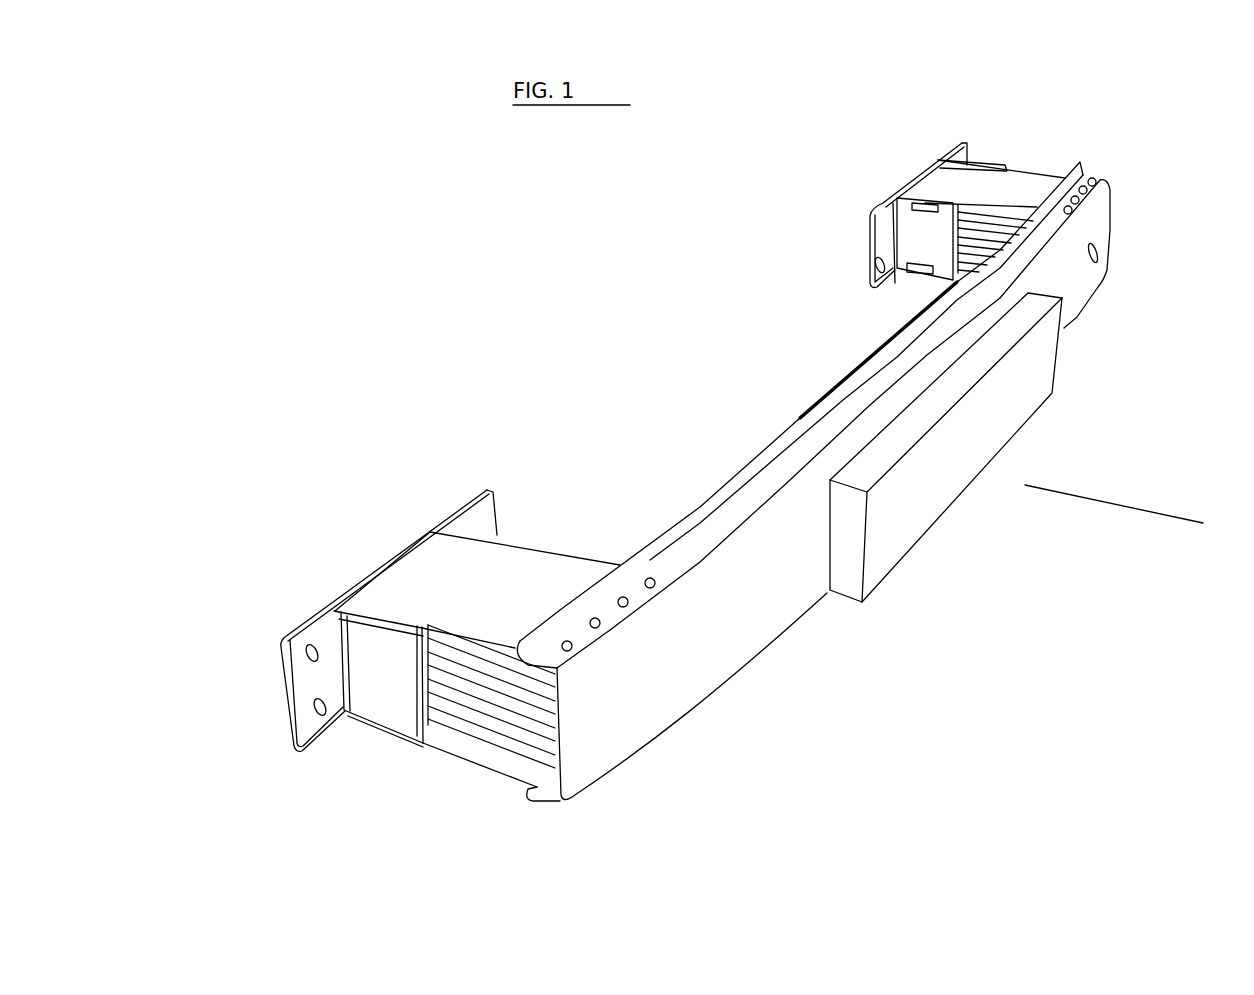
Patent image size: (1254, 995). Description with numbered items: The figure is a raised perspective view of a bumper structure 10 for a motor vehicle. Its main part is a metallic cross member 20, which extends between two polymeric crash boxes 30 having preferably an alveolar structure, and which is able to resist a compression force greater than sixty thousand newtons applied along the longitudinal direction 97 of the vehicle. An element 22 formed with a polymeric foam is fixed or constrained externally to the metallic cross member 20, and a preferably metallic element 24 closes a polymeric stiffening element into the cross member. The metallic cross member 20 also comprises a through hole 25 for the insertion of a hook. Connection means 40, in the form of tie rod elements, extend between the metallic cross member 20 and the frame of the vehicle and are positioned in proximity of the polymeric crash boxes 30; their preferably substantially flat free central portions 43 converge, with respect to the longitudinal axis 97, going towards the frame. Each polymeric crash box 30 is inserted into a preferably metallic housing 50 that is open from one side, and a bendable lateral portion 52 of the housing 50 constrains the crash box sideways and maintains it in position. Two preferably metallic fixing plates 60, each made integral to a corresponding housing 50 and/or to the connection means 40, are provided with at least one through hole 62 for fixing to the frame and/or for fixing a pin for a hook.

The bumper structure 10 is at (453, 257).
The metallic cross member 20 is at (674, 658).
The element formed with a polymeric foam 22 is at (917, 490).
The element 24 is at (830, 390).
The through hole 25 is at (1100, 250).
The polymeric crash box 30 is at (503, 702).
The connection means 40 is at (560, 586).
The free central portion 43 is at (533, 575).
The housing 50 is at (990, 163).
The bendable lateral portion 52 is at (933, 207).
The fixing plate 60 is at (477, 517).
The through hole 62 is at (310, 650).
The longitudinal direction 97 is at (1083, 492).